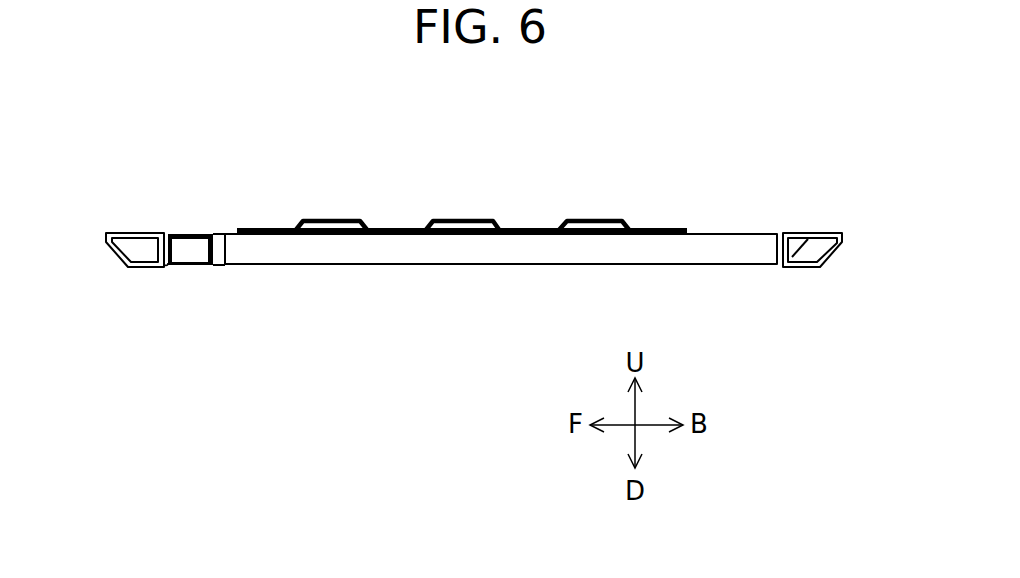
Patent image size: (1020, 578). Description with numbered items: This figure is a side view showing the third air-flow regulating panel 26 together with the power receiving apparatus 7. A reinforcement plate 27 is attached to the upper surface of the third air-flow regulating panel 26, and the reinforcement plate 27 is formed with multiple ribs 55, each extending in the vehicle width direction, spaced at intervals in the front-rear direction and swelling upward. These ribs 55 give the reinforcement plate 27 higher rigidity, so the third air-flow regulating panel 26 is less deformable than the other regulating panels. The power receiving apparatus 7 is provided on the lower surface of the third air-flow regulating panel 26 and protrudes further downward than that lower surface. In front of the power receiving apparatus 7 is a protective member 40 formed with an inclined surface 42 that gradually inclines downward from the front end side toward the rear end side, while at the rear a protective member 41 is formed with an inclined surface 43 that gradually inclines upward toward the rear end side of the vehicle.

The power receiving apparatus 7 is at (420, 265).
The third air-flow regulating panel 26 is at (217, 233).
The reinforcement plate 27 is at (595, 220).
The ribs 55 is at (471, 220).
The protective member 40 is at (145, 269).
The protective member 41 is at (805, 268).
The inclined surface 42 is at (118, 259).
The inclined surface 43 is at (829, 257).